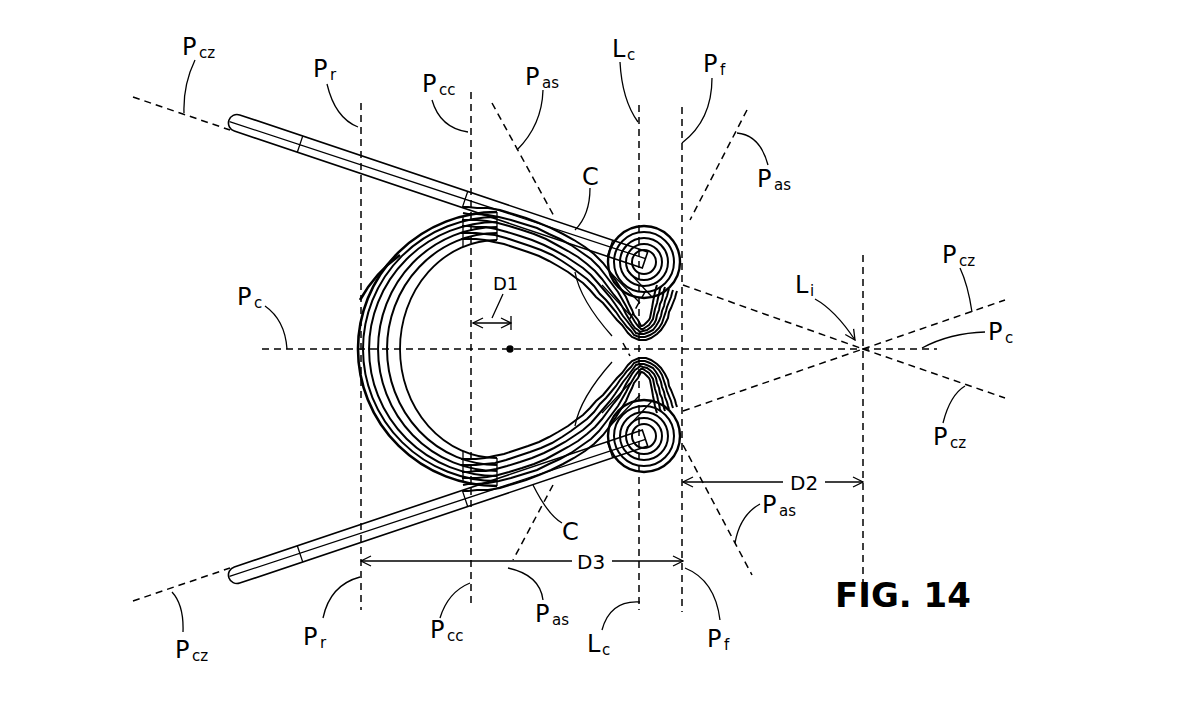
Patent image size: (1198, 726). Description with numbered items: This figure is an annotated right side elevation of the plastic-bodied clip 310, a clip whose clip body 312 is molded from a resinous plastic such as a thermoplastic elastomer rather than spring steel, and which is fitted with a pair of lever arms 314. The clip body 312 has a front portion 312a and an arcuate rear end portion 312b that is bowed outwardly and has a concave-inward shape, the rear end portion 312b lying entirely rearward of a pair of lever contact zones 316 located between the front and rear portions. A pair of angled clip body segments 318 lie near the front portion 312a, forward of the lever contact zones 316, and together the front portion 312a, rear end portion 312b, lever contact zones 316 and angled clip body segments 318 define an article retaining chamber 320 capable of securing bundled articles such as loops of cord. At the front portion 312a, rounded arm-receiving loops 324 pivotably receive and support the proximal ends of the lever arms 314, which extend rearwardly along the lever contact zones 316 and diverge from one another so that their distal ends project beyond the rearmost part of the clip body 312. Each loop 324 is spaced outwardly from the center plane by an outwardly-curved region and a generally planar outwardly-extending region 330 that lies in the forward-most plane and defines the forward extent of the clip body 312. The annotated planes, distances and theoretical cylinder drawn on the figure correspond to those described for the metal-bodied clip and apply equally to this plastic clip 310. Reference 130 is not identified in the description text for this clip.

The plastic-bodied clip 310 is at (207, 474).
The clip body 312 is at (427, 285).
The front portion 312a is at (772, 262).
The rear end portion 312b is at (342, 273).
The lever arm 314 is at (272, 120).
The lever contact zone 316 is at (497, 262).
The angled clip body segment 318 is at (600, 328).
The article retaining chamber 320 is at (455, 402).
The arm-receiving loop 324 is at (632, 237).
The outwardly-extending region 330 is at (692, 430).
The upper eyelet pin 130 is at (692, 264).